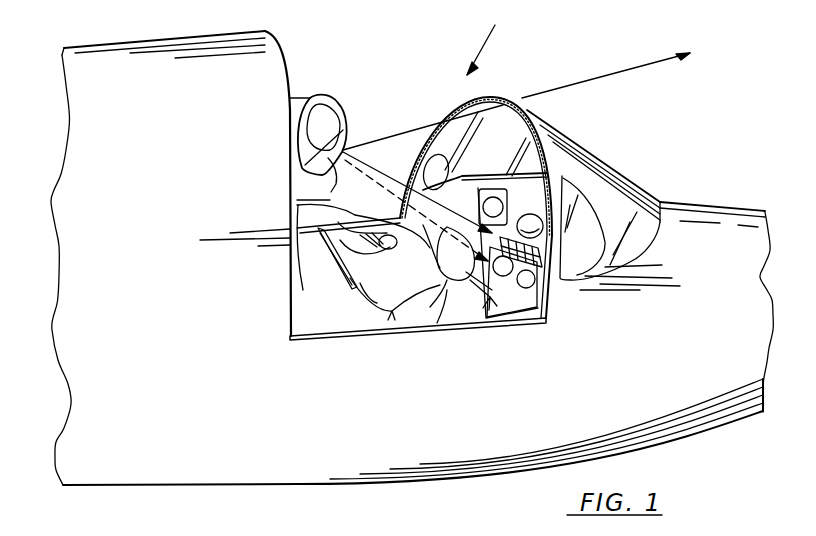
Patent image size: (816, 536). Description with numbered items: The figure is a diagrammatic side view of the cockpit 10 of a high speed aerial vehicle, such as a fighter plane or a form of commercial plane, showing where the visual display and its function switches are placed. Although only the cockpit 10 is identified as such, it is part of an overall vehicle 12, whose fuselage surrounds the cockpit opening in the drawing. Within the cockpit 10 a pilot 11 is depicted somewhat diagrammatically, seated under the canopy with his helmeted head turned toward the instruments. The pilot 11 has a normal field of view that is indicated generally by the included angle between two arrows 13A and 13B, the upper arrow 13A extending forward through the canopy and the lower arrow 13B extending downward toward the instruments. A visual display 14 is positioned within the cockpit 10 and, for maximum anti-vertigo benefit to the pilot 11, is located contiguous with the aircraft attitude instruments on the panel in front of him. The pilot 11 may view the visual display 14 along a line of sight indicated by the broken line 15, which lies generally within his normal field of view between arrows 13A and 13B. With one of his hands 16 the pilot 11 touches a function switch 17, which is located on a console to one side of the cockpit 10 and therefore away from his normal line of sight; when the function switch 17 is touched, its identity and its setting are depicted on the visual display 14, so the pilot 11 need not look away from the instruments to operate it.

The cockpit 10 is at (495, 25).
The pilot 11 is at (308, 277).
The overall vehicle 12 is at (147, 229).
The arrow 13A is at (588, 79).
The arrow 13B is at (417, 216).
The visual display 14 is at (521, 286).
The broken line 15 is at (442, 181).
The hand 16 is at (362, 233).
The function switch 17 is at (397, 218).